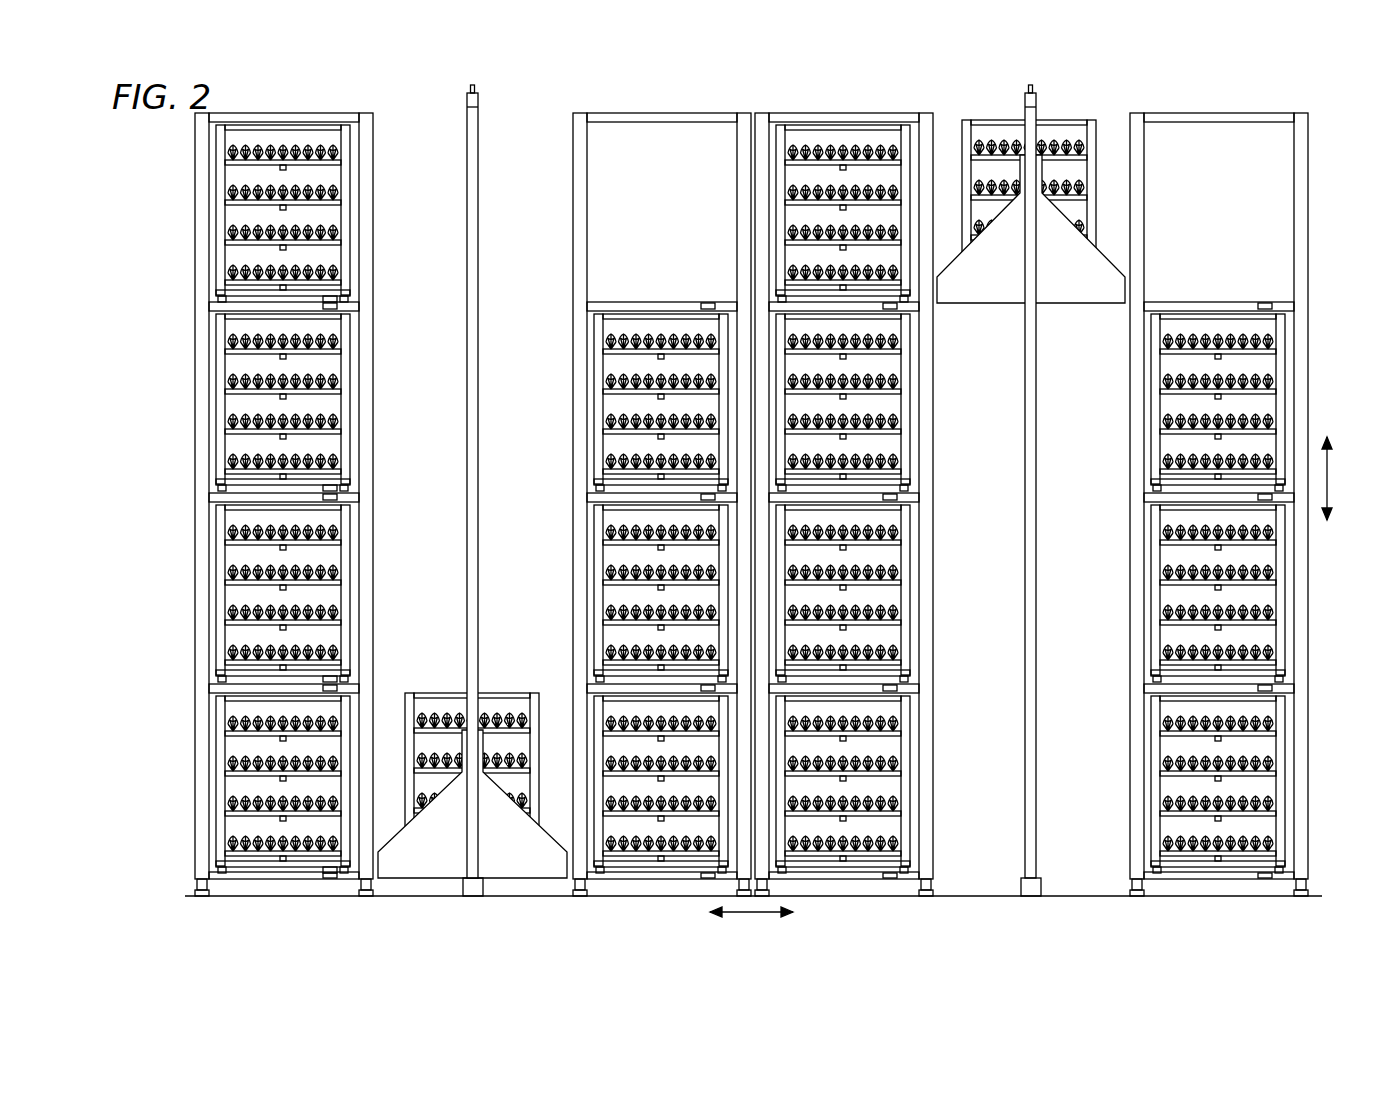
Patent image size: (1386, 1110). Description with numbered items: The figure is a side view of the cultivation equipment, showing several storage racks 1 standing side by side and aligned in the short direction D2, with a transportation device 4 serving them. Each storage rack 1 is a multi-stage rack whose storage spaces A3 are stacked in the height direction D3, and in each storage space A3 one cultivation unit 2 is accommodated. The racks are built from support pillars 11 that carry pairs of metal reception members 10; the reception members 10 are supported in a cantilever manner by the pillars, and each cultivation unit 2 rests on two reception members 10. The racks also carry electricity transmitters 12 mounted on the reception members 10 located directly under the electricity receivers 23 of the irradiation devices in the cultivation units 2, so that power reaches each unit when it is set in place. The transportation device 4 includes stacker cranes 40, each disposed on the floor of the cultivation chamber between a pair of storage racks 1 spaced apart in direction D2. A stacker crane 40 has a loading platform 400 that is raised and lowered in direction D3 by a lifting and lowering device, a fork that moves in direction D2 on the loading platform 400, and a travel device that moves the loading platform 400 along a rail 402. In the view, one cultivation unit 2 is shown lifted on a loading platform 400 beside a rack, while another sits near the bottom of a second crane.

The storage rack 1 is at (746, 505).
The cultivation unit 2 is at (350, 150).
The transportation device 4 is at (751, 520).
The reception member 10 is at (358, 305).
The support pillar 11 is at (197, 259).
The electricity transmitter 12 is at (365, 318).
The electricity receiver 23 is at (345, 297).
The stacker crane 40 is at (472, 156).
The loading platform 400 is at (530, 858).
The rail 402 is at (472, 885).
The storage space A3 is at (330, 218).
The direction D2 is at (751, 927).
The direction D3 is at (1344, 478).